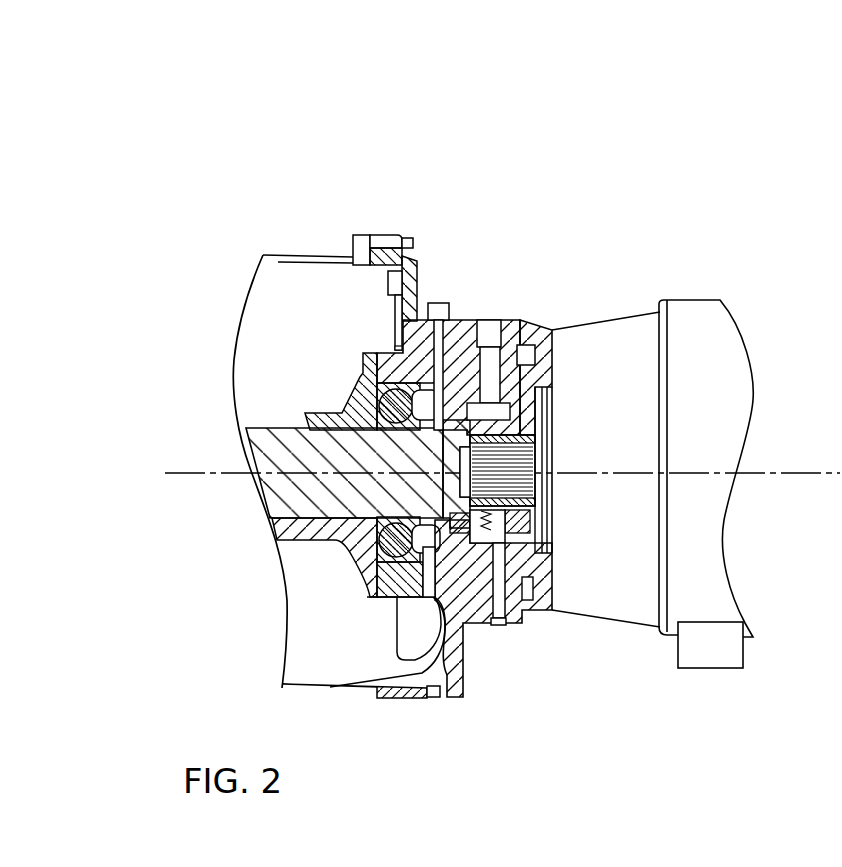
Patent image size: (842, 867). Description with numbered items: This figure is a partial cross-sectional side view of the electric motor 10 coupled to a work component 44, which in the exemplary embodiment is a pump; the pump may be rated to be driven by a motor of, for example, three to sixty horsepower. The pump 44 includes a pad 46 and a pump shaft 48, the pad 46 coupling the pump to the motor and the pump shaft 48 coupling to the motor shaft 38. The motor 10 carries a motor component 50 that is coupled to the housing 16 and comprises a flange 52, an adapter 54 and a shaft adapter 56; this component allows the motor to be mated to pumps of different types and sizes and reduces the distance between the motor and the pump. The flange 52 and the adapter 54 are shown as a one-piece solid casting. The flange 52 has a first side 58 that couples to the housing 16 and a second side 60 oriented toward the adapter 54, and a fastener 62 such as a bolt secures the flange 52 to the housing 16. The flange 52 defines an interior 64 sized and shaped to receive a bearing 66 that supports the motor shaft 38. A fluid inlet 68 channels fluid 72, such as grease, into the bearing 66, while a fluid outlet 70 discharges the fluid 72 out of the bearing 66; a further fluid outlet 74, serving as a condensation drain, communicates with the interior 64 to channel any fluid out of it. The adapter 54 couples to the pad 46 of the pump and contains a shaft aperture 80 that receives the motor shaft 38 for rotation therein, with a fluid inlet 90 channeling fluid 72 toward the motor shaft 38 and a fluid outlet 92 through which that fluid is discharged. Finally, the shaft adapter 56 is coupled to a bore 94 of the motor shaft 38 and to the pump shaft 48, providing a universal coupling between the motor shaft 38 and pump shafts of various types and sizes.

The motor 10 is at (249, 281).
The housing 16 is at (280, 258).
The motor shaft 38 is at (382, 457).
The work component 44 is at (645, 372).
The pad 46 is at (551, 327).
The pump shaft 48 is at (553, 456).
The motor component 50 is at (332, 145).
The flange 52 is at (390, 252).
The adapter 54 is at (507, 318).
The shaft adapter 56 is at (552, 520).
The first side 58 is at (453, 321).
The second side 60 is at (452, 320).
The fastener 62 is at (410, 238).
The interior 64 is at (340, 410).
The bearing 66 is at (352, 397).
The fluid inlet 68 is at (400, 335).
The fluid outlet 70 is at (367, 597).
The fluid 72 is at (543, 324).
The fluid outlet 74 is at (433, 698).
The shaft aperture 80 is at (545, 436).
The fluid inlet 90 is at (490, 320).
The fluid outlet 92 is at (500, 625).
The bore 94 is at (468, 438).